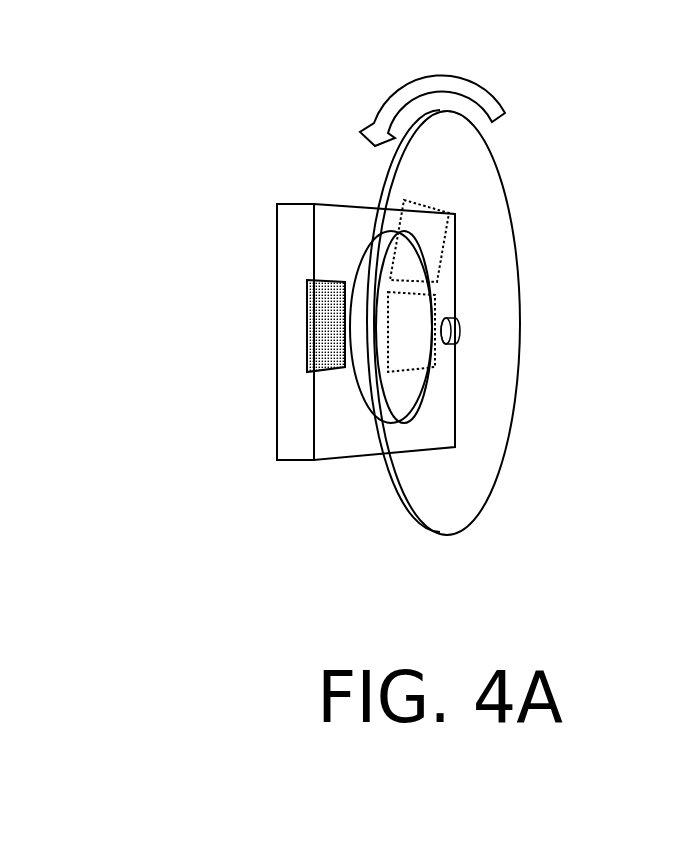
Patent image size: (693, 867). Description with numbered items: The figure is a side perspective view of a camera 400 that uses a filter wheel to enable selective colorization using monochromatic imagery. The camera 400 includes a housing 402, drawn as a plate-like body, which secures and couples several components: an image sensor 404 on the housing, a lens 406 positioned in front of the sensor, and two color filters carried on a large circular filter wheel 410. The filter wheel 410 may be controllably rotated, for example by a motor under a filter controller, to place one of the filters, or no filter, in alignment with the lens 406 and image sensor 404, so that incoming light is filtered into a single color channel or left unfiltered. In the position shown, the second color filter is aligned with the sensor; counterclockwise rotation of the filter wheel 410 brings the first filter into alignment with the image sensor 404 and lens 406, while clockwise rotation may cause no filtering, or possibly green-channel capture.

The camera 400 is at (221, 77).
The housing 402 is at (293, 204).
The image sensor 404 is at (310, 298).
The lens 406 is at (365, 412).
The filter wheel 410 is at (495, 158).